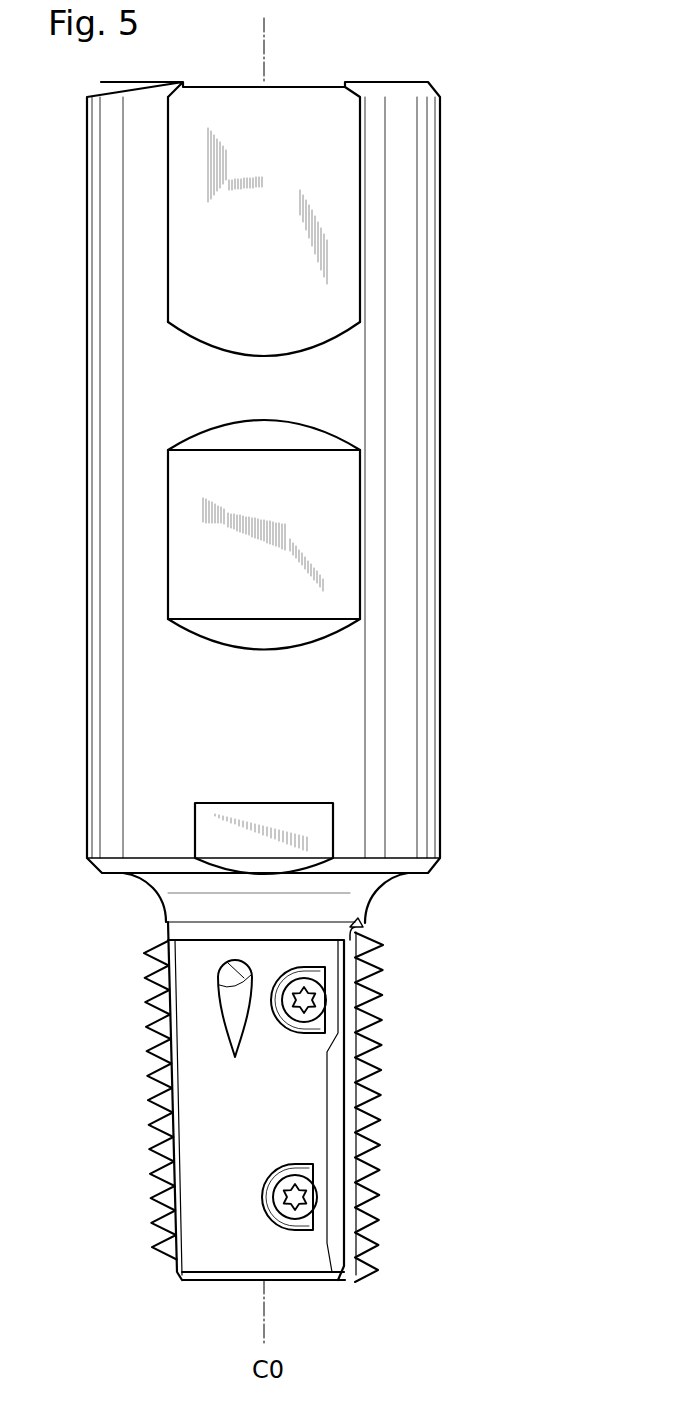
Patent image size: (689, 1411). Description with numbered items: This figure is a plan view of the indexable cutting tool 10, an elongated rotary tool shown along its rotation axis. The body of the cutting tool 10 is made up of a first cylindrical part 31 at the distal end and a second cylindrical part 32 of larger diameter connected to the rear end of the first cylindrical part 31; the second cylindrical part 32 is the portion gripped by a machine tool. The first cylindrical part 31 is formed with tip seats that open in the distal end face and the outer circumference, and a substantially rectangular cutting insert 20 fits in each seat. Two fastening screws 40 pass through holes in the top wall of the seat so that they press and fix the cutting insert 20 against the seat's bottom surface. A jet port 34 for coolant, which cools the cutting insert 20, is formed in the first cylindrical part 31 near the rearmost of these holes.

The cutting tool 10 is at (479, 1353).
The cutting insert 20 is at (368, 1103).
The first cylindrical part 31 is at (230, 1103).
The second cylindrical part 32 is at (400, 718).
The jet port 34 is at (218, 986).
The fastening screw 40 is at (327, 997).